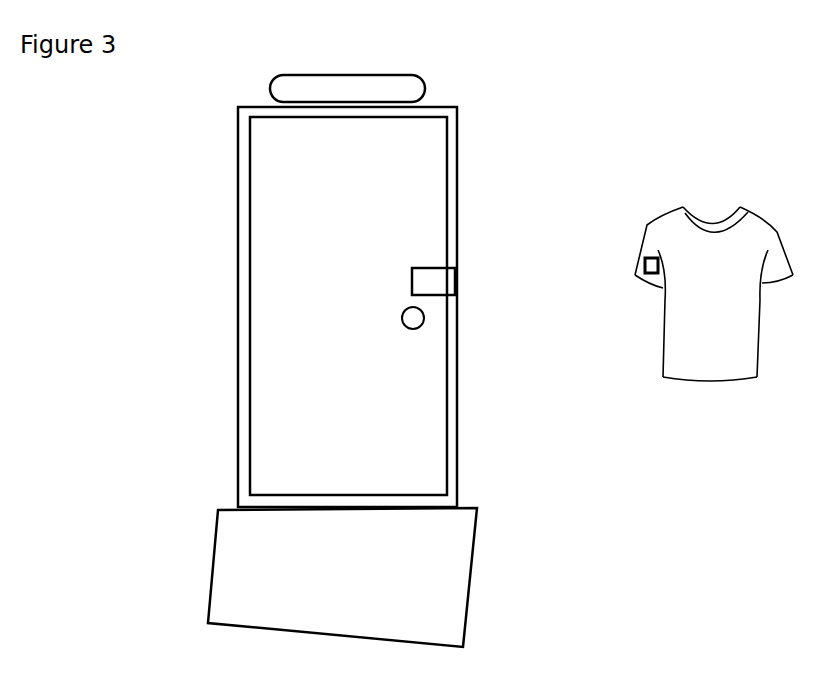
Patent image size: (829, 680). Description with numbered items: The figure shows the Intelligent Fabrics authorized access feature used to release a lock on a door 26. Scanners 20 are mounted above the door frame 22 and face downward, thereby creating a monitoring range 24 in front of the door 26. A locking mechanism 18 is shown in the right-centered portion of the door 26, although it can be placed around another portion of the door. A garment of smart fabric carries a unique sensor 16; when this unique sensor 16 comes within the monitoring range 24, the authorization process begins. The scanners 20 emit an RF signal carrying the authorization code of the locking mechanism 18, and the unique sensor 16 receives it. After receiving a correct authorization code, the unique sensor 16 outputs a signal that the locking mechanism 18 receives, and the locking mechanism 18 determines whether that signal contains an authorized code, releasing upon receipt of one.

The unique sensor 16 is at (643, 262).
The door locking mechanism 18 is at (445, 285).
The scanners 20 is at (360, 88).
The door frame 22 is at (449, 107).
The monitoring range 24 is at (250, 537).
The door 26 is at (273, 160).